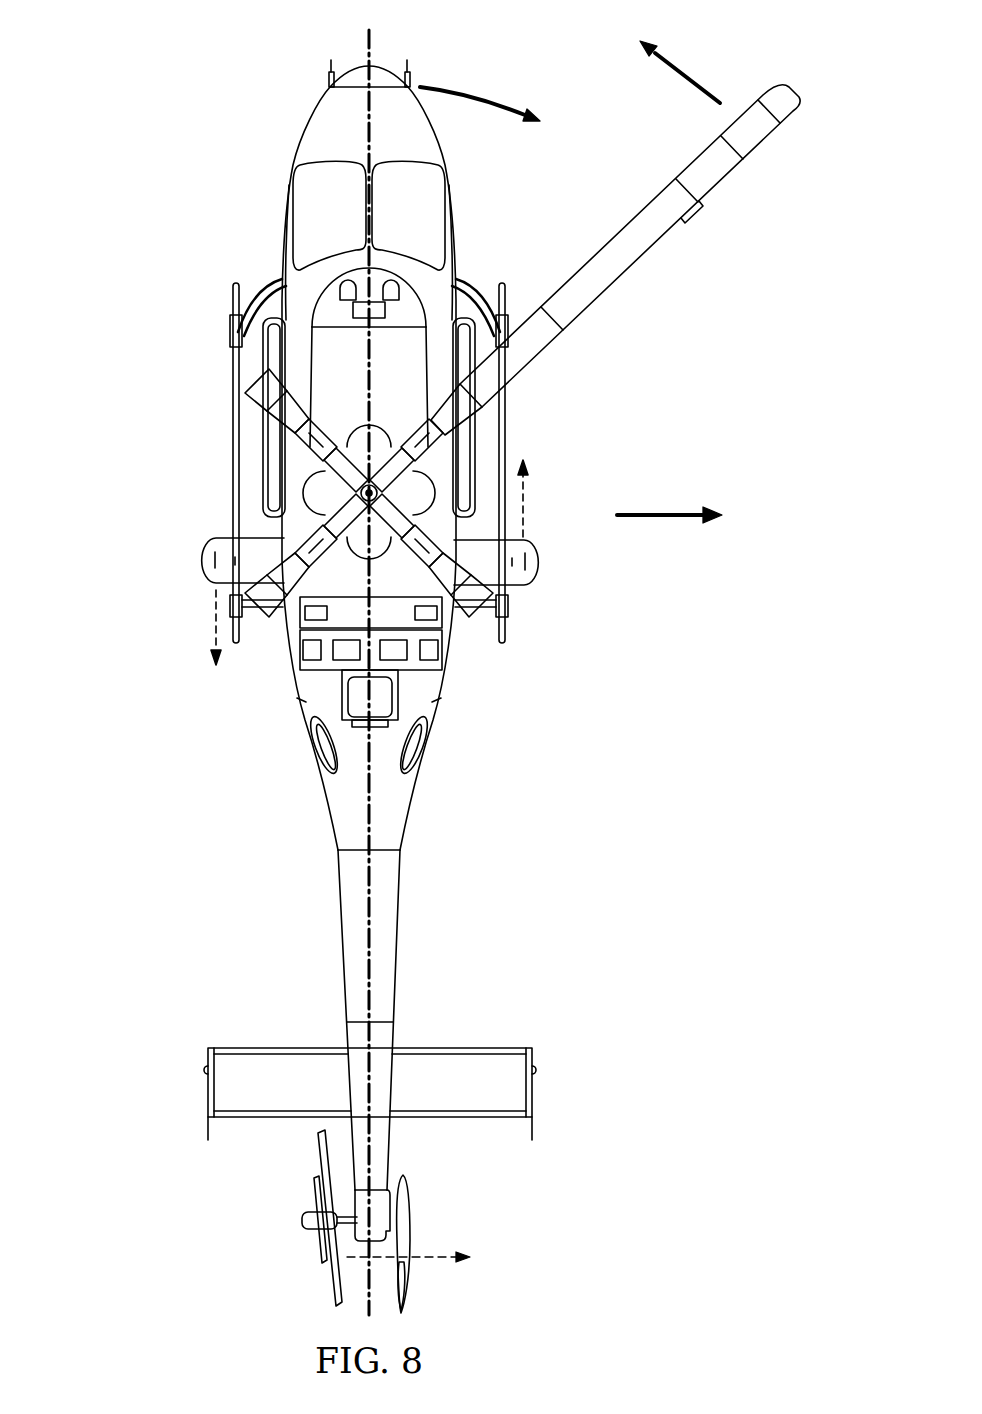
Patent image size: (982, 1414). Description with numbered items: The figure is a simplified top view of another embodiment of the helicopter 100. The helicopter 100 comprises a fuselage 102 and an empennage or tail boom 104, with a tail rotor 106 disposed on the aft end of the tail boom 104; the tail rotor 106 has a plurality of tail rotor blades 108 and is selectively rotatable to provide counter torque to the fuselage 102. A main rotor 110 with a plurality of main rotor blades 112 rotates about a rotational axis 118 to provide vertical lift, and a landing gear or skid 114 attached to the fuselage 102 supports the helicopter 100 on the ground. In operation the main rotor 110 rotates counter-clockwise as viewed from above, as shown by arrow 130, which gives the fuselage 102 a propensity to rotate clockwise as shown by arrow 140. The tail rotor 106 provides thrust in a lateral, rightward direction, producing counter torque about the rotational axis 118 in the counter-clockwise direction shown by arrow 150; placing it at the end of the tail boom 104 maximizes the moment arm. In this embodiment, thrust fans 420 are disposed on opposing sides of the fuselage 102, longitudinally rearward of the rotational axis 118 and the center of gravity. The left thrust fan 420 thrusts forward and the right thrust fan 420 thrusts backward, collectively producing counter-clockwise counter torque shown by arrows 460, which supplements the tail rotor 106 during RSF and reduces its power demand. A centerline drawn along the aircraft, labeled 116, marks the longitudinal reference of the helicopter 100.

The helicopter 100 is at (115, 57).
The fuselage 102 is at (377, 62).
The tail boom 104 is at (398, 925).
The tail rotor 106 is at (289, 1221).
The tail rotor blades 108 is at (320, 1148).
The main rotor 110 is at (327, 493).
The main rotor blades 112 is at (716, 186).
The landing gear or skid 114 is at (510, 424).
The longitudinal axis 116 is at (366, 873).
The rotational axis 118 is at (357, 497).
The arrow indicating main rotor rotation 130 is at (692, 73).
The arrow indicating fuselage rotation tendency 140 is at (470, 92).
The arrow indicating tail rotor counter torque 150 is at (436, 1262).
The thrust fans 420 is at (190, 565).
The arrows indicating thrust fan counter torque 460 is at (215, 620).